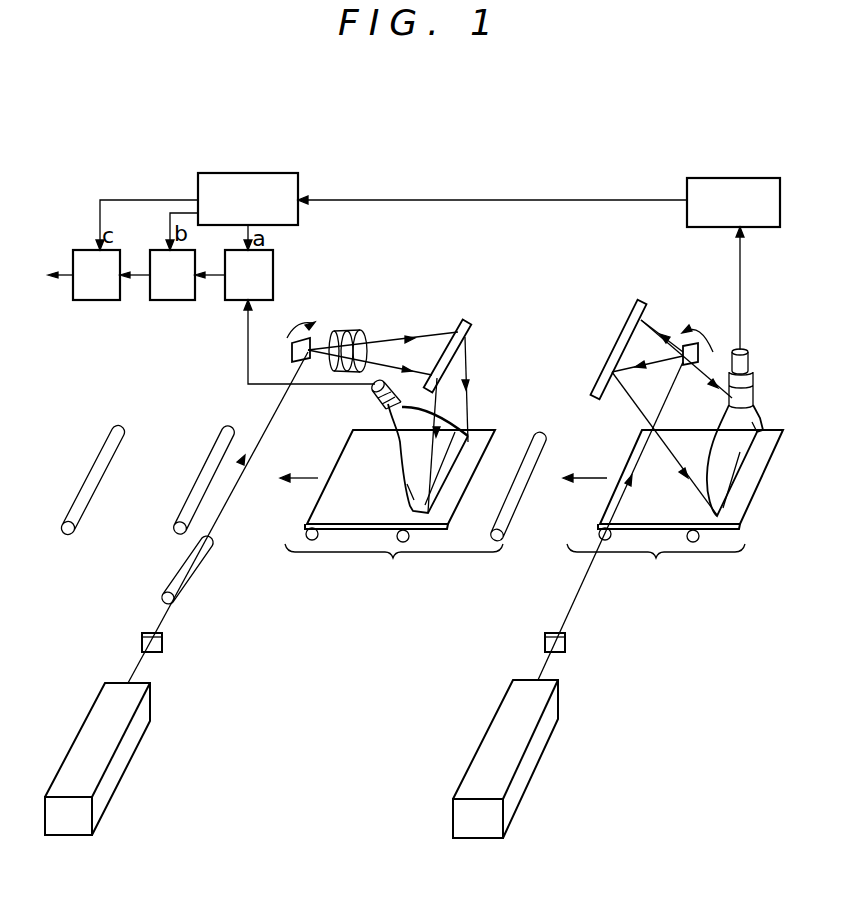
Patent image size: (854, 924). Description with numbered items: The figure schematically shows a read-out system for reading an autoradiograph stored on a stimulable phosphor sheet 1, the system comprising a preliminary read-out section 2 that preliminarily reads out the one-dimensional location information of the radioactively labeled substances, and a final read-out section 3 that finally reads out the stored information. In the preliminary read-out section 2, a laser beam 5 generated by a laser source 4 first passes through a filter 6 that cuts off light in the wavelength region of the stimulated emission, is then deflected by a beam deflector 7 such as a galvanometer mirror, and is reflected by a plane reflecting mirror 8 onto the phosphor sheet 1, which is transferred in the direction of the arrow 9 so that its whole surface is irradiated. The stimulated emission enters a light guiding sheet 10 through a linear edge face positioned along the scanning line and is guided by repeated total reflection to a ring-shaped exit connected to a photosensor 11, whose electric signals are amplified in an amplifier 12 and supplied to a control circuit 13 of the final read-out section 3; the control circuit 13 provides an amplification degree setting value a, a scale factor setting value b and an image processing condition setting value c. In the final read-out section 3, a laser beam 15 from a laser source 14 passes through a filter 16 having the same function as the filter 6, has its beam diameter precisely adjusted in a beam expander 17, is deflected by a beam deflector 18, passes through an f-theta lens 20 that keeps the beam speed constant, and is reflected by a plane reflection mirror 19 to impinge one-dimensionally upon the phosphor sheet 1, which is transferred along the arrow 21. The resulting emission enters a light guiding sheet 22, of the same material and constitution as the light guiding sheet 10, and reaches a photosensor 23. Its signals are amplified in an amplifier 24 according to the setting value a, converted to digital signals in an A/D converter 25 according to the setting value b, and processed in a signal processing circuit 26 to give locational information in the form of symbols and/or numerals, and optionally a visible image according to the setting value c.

The stimulable phosphor sheet 1 is at (463, 480).
The preliminary read-out section 2 is at (656, 568).
The final read-out section 3 is at (394, 568).
The laser source 4 is at (522, 777).
The laser beam 5 is at (552, 665).
The filter 6 is at (567, 642).
The beam deflector 7 is at (686, 343).
The plane reflecting mirror 8 is at (632, 318).
The arrow 9 is at (590, 478).
The light guiding sheet 10 is at (745, 431).
The photosensor 11 is at (745, 380).
The amplifier 12 is at (733, 202).
The control circuit 13 is at (248, 199).
The laser source 14 is at (122, 758).
The laser beam 15 is at (145, 665).
The filter 16 is at (165, 643).
The beam expander 17 is at (190, 578).
The beam deflector 18 is at (310, 342).
The plane reflection mirror 19 is at (467, 320).
The f-theta lens 20 is at (364, 345).
The arrow 21 is at (305, 478).
The light guiding sheet 22 is at (470, 430).
The photosensor 23 is at (376, 402).
The amplifier 24 is at (249, 275).
The A/D converter 25 is at (172, 275).
The signal processing circuit 26 is at (96, 275).